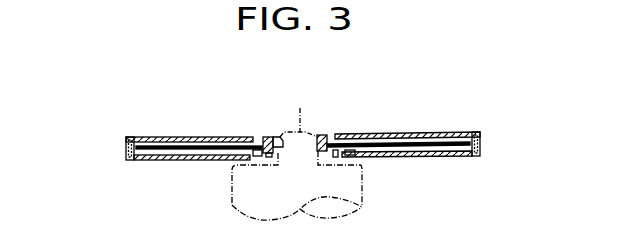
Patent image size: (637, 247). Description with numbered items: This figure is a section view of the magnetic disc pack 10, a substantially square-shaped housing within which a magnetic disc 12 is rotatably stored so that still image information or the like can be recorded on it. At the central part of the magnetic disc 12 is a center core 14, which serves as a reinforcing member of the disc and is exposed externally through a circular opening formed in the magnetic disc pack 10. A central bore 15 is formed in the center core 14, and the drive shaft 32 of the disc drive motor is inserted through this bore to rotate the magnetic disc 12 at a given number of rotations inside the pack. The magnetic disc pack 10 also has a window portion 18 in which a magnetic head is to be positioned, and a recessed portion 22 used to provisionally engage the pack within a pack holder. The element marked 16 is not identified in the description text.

The magnetic disc pack 10 is at (161, 125).
The magnetic disc 12 is at (191, 137).
The center core 14 is at (267, 135).
The central bore 15 is at (283, 132).
The hinge block 16 is at (338, 133).
The window portion 18 is at (433, 157).
The recessed portion 22 is at (127, 148).
The drive shaft 32 is at (300, 108).